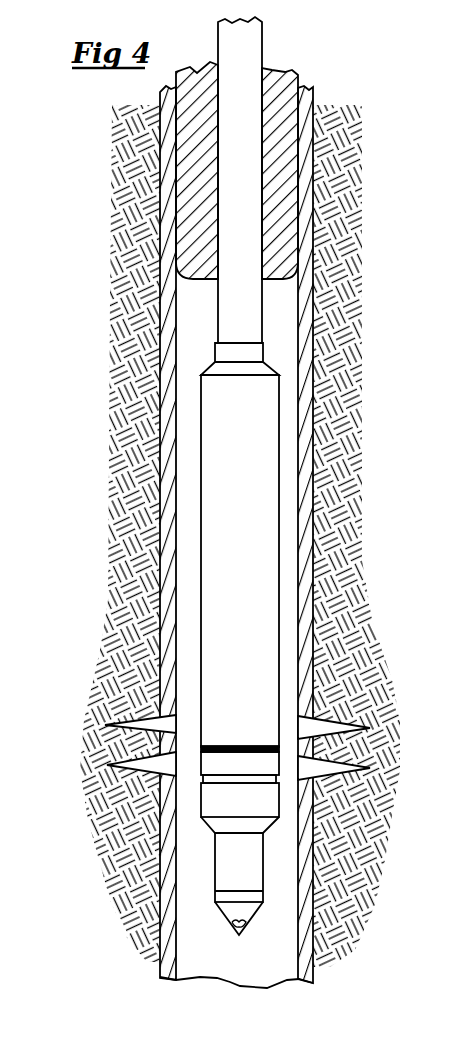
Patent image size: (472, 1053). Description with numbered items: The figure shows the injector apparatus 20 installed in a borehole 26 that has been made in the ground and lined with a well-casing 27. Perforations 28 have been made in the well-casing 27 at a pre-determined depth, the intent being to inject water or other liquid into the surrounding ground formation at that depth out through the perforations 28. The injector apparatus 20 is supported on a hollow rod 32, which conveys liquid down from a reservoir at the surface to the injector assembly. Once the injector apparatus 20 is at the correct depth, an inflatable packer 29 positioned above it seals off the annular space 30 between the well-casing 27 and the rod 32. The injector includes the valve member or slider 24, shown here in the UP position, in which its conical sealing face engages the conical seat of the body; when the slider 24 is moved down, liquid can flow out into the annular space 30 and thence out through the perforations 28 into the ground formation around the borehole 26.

The injector apparatus 20 is at (252, 598).
The slider 24 is at (252, 768).
The borehole 26 is at (152, 927).
The well-casing 27 is at (113, 584).
The perforations 28 is at (107, 725).
The inflatable packer 29 is at (285, 200).
The annular space 30 is at (282, 320).
The rod 32 is at (243, 306).